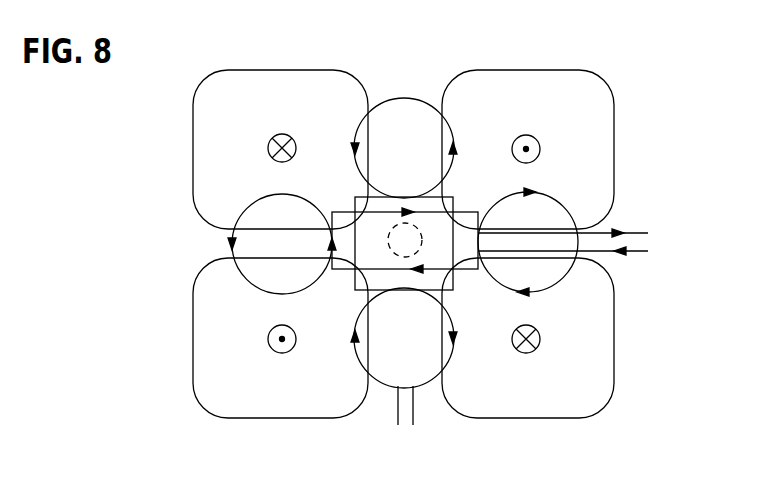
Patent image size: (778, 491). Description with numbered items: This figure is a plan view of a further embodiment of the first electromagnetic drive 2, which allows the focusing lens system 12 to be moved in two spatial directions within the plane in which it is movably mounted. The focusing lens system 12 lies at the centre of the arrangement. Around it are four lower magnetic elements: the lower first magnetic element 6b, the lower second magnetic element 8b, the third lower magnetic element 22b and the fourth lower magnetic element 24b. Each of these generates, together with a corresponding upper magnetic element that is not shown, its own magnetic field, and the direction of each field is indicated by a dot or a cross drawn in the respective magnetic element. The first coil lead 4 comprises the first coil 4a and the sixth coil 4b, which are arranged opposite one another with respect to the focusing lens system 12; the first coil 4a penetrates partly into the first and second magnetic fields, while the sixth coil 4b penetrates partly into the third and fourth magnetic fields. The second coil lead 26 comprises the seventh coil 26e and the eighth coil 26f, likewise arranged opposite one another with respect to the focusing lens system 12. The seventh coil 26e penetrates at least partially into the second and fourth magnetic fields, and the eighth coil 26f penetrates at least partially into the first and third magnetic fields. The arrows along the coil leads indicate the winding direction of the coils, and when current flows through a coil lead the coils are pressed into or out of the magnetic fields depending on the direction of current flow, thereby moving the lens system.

The first electromagnetic drive 2 is at (682, 80).
The first coil lead 4 is at (397, 403).
The first coil 4a is at (357, 247).
The sixth coil 4b is at (425, 386).
The lower first magnetic element 6b is at (614, 135).
The lower second magnetic element 8b is at (194, 122).
The focusing lens system 12 is at (420, 231).
The third lower magnetic element 22b is at (614, 336).
The fourth lower magnetic element 24b is at (194, 302).
The second coil lead 26 is at (637, 253).
The seventh coil 26e is at (230, 237).
The eighth coil 26f is at (566, 276).